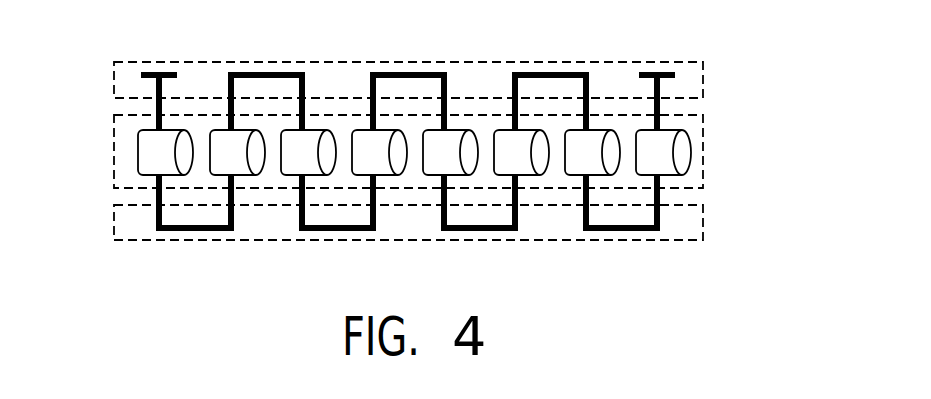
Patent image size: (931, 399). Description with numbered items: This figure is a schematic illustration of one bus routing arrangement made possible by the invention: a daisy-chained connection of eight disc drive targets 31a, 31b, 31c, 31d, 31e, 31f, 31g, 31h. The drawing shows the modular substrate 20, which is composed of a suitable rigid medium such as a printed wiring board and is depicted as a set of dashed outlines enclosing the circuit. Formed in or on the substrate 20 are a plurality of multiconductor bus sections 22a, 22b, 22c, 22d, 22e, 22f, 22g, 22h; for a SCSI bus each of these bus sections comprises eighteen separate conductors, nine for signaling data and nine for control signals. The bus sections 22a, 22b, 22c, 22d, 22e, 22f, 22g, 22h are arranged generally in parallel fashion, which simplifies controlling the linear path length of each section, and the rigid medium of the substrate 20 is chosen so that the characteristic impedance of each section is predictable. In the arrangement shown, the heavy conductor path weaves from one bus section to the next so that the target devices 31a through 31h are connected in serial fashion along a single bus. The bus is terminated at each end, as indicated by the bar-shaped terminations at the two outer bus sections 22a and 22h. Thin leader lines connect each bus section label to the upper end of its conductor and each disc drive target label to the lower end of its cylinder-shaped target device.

The substrate 20 is at (703, 158).
The bus section 22a is at (158, 128).
The bus section 22b is at (225, 126).
The bus section 22c is at (300, 127).
The bus section 22d is at (370, 126).
The bus section 22e is at (450, 126).
The bus section 22f is at (517, 127).
The bus section 22g is at (593, 128).
The bus section 22h is at (663, 128).
The disc drive target 31a is at (148, 178).
The disc drive target 31b is at (215, 178).
The disc drive target 31c is at (290, 178).
The disc drive target 31d is at (358, 178).
The disc drive target 31e is at (460, 178).
The disc drive target 31f is at (522, 178).
The disc drive target 31g is at (602, 178).
The disc drive target 31h is at (670, 178).